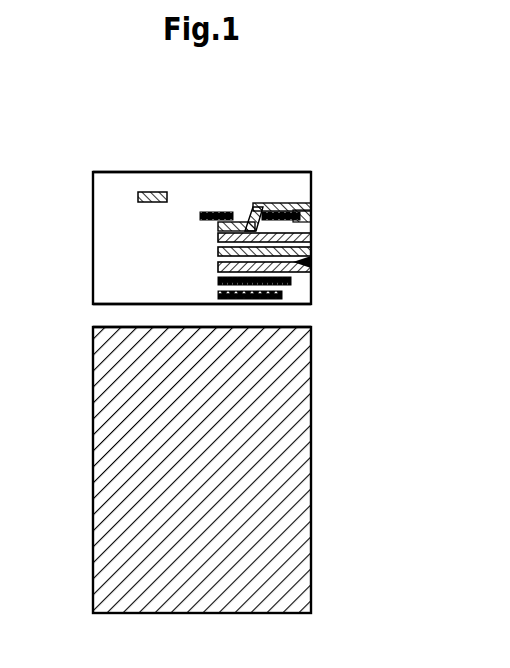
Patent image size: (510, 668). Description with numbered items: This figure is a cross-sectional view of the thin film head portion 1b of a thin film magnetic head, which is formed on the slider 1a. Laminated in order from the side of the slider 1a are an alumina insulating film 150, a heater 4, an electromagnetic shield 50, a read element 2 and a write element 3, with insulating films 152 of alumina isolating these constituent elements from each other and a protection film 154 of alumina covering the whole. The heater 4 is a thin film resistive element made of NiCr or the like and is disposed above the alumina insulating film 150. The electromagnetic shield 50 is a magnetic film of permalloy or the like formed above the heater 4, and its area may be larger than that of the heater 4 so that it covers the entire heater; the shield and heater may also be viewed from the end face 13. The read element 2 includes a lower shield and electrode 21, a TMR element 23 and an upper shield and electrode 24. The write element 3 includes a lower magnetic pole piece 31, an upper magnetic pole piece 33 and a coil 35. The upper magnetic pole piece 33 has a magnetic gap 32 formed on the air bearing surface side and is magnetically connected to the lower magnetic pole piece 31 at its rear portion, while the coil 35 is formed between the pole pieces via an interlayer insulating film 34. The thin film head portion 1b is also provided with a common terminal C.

The slider 1a is at (312, 452).
The thin film head portion 1b is at (310, 182).
The end face 13 is at (148, 172).
The protection film 154 is at (272, 188).
The insulating films 152 is at (190, 267).
The alumina insulating film 150 is at (311, 325).
The common terminal C is at (153, 203).
The read element 2 is at (337, 271).
The lower shield and electrode 21 is at (283, 296).
The TMR element 23 is at (312, 268).
The upper shield and electrode 24 is at (312, 251).
The write element 3 is at (314, 185).
The lower magnetic pole piece 31 is at (303, 229).
The magnetic gap 32 is at (313, 222).
The upper magnetic pole piece 33 is at (313, 217).
The interlayer insulating film 34 is at (313, 211).
The coil 35 is at (313, 206).
The electromagnetic shield 50 is at (291, 281).
The heater 4 is at (310, 300).